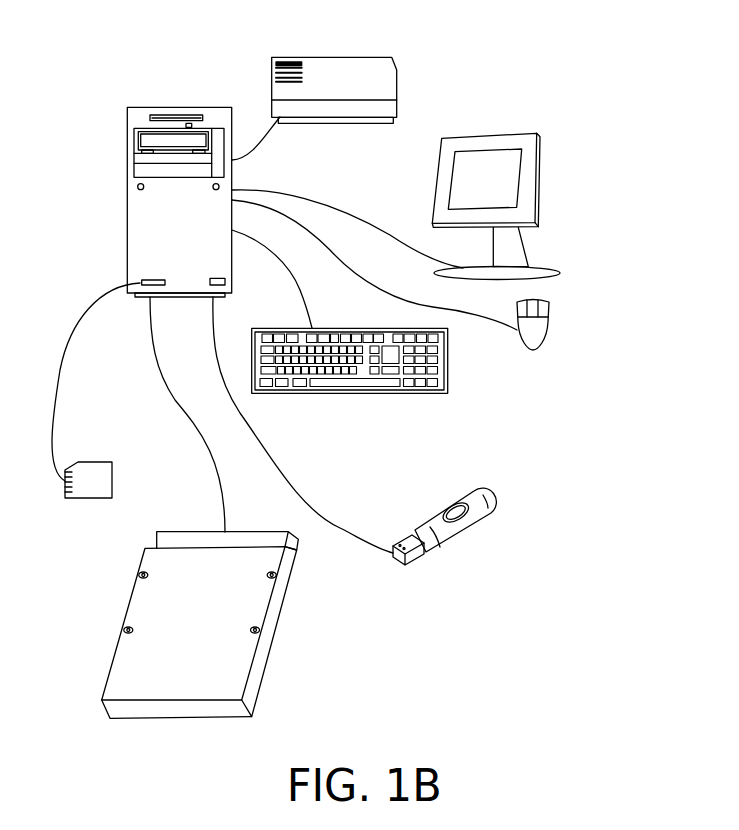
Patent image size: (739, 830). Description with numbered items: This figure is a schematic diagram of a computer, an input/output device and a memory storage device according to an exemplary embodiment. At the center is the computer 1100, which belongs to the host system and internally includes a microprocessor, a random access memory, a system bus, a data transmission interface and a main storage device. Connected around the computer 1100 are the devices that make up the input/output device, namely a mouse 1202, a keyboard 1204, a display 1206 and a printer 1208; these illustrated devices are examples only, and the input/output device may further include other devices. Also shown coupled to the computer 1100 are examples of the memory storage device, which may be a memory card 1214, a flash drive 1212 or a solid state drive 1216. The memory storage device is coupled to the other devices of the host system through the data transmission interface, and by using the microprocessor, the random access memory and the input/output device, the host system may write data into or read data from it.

The computer 1100 is at (182, 107).
The printer 1208 is at (332, 57).
The display 1206 is at (497, 133).
The mouse 1202 is at (548, 331).
The keyboard 1204 is at (448, 370).
The memory card 1214 is at (112, 472).
The solid state drive 1216 is at (245, 522).
The flash drive 1212 is at (440, 517).